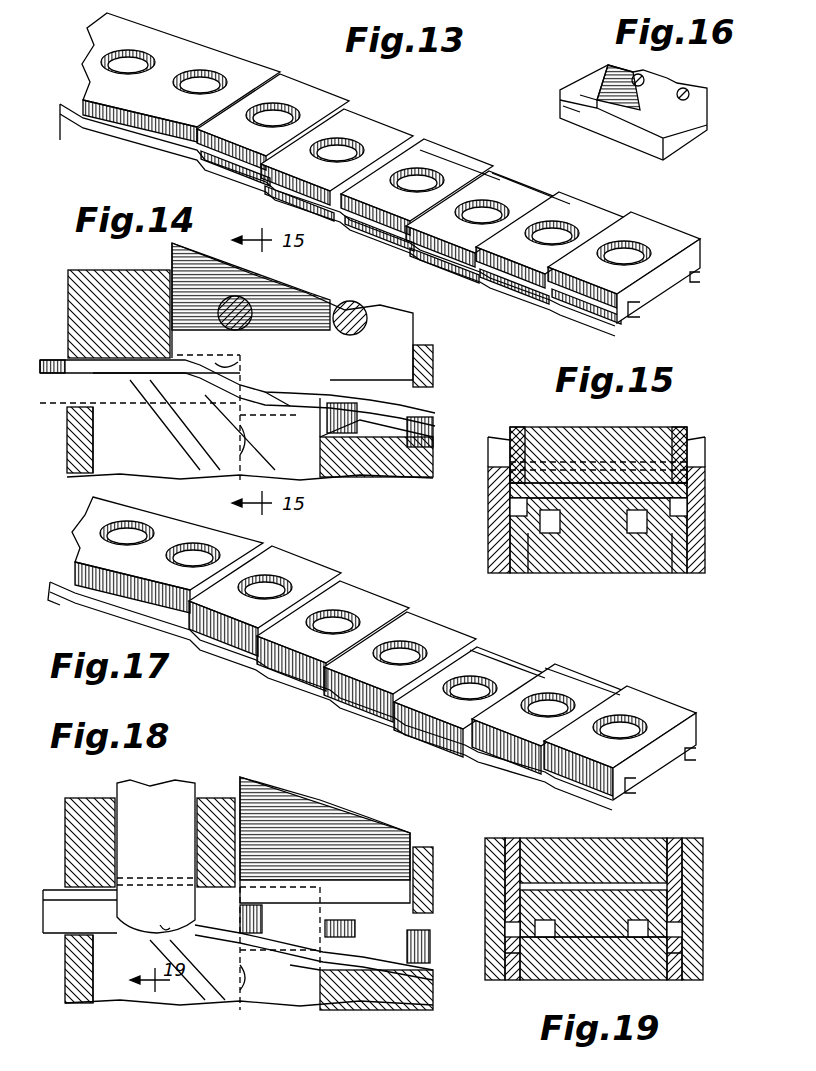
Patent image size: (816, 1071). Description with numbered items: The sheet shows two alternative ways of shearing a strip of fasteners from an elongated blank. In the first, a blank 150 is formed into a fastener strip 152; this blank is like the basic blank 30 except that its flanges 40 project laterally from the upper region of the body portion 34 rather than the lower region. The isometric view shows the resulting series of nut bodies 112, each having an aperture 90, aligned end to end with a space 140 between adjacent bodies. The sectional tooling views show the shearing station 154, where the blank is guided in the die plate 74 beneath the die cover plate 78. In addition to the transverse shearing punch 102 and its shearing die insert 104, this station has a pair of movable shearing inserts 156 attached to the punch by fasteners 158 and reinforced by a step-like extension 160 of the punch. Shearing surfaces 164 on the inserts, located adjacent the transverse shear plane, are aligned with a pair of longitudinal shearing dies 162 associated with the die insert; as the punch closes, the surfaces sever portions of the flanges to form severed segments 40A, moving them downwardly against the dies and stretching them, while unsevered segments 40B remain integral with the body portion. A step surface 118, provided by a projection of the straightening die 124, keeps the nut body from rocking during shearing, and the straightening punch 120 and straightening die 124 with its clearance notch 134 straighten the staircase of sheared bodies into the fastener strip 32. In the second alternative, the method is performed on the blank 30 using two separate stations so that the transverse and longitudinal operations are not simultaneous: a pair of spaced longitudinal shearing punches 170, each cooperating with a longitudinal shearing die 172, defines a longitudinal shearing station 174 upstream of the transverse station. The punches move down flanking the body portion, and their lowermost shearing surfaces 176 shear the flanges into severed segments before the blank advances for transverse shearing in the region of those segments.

In FIG. 17, the blank 30 is at (73, 520).
In FIG. 18, the blank 30 is at (60, 847).
In FIG. 19, the blank 30 is at (605, 890).
In FIG. 17, the fastener strip 32 is at (710, 693).
In FIG. 13, the body portion 34 is at (90, 110).
In FIG. 17, the body portion 34 is at (83, 535).
In FIG. 18, the body portion 34 is at (60, 888).
In FIG. 13, the flanges 40 is at (170, 35).
In FIG. 14, the flanges 40 is at (50, 397).
In FIG. 17, the flanges 40 is at (53, 590).
In FIG. 18, the flanges 40 is at (55, 937).
In FIG. 13, the severed flange segments 40A is at (310, 90).
In FIG. 14, the severed flange segments 40A is at (197, 372).
In FIG. 17, the severed flange segments 40A is at (110, 617).
In FIG. 18, the severed flange segments 40A is at (145, 935).
In FIG. 19, the severed flange segments 40A is at (507, 953).
In FIG. 13, the unsevered flange segments 40B is at (290, 85).
In FIG. 14, the unsevered flange segments 40B is at (335, 388).
In FIG. 15, the unsevered flange segments 40B is at (693, 503).
In FIG. 17, the unsevered flange segments 40B is at (153, 607).
In FIG. 18, the unsevered flange segments 40B is at (190, 938).
In FIG. 14, the die plate 74 is at (70, 458).
In FIG. 15, the die plate 74 is at (490, 530).
In FIG. 18, the die plate 74 is at (77, 1000).
In FIG. 19, the die plate 74 is at (485, 980).
In FIG. 14, the die cover plate 78 is at (73, 270).
In FIG. 15, the die cover plate 78 is at (705, 442).
In FIG. 18, the die cover plate 78 is at (80, 797).
In FIG. 19, the die cover plate 78 is at (703, 847).
In FIG. 13, the aperture 90 is at (193, 73).
In FIG. 17, the aperture 90 is at (197, 550).
In FIG. 16, the shearing punch 102 is at (682, 142).
In FIG. 15, the shearing punch 102 is at (580, 410).
In FIG. 18, the shearing punch 102 is at (313, 815).
In FIG. 14, the shearing die insert 104 is at (250, 477).
In FIG. 15, the shearing die insert 104 is at (550, 527).
In FIG. 18, the shearing die insert 104 is at (248, 1003).
In FIG. 19, the shearing die insert 104 is at (577, 975).
In FIG. 13, the nut body 112 is at (333, 100).
In FIG. 14, the nut body 112 is at (295, 443).
In FIG. 15, the nut body 112 is at (590, 563).
In FIG. 17, the nut body 112 is at (323, 577).
In FIG. 18, the nut body 112 is at (312, 917).
In FIG. 14, the step surface 118 is at (247, 443).
In FIG. 15, the step surface 118 is at (642, 527).
In FIG. 18, the step surface 118 is at (248, 980).
In FIG. 14, the straightening punch 120 is at (425, 352).
In FIG. 18, the straightening punch 120 is at (427, 845).
In FIG. 14, the straightening die 124 is at (377, 472).
In FIG. 15, the straightening die 124 is at (612, 577).
In FIG. 18, the straightening die 124 is at (373, 1010).
In FIG. 14, the clearance notch 134 is at (358, 430).
In FIG. 18, the clearance notch 134 is at (327, 1003).
In FIG. 13, the space 140 is at (493, 290).
In FIG. 17, the space 140 is at (533, 670).
In FIG. 13, the blank 150 is at (84, 48).
In FIG. 14, the blank 150 is at (55, 350).
In FIG. 15, the blank 150 is at (600, 467).
In FIG. 13, the fastener strip 152 is at (693, 310).
In FIG. 14, the shearing station 154 is at (278, 277).
In FIG. 15, the shearing station 154 is at (672, 398).
In FIG. 16, the shearing inserts 156 is at (705, 122).
In FIG. 14, the shearing inserts 156 is at (307, 293).
In FIG. 15, the shearing inserts 156 is at (513, 428).
In FIG. 16, the fasteners 158 is at (680, 88).
In FIG. 14, the fasteners 158 is at (333, 318).
In FIG. 16, the step-like extension 160 is at (580, 107).
In FIG. 14, the step-like extension 160 is at (217, 347).
In FIG. 15, the step-like extension 160 is at (540, 432).
In FIG. 14, the longitudinal shearing dies 162 is at (305, 492).
In FIG. 15, the longitudinal shearing dies 162 is at (515, 573).
In FIG. 16, the shearing surfaces 164 is at (595, 103).
In FIG. 14, the shearing surfaces 164 is at (238, 362).
In FIG. 18, the longitudinal shearing punches 170 is at (130, 783).
In FIG. 19, the longitudinal shearing punches 170 is at (508, 840).
In FIG. 18, the longitudinal shearing die 172 is at (190, 1000).
In FIG. 19, the longitudinal shearing die 172 is at (512, 980).
In FIG. 18, the longitudinal shearing station 174 is at (208, 783).
In FIG. 19, the longitudinal shearing station 174 is at (557, 823).
In FIG. 18, the shearing surfaces 176 is at (163, 930).
In FIG. 19, the shearing surfaces 176 is at (507, 933).